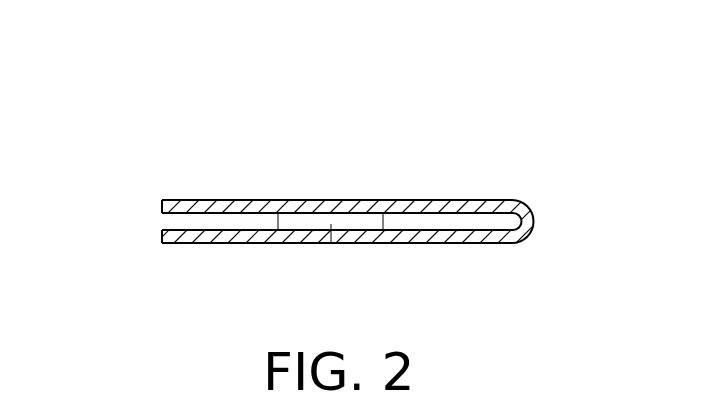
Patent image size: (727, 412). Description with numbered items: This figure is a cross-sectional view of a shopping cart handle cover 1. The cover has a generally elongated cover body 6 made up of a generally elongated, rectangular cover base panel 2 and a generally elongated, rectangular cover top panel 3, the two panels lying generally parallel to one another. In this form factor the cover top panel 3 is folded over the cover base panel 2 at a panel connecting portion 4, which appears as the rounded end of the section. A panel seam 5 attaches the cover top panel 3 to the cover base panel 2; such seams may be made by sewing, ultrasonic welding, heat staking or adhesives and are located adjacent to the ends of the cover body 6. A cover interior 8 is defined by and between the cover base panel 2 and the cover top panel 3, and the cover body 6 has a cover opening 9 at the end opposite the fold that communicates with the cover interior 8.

The shopping cart handle cover 1 is at (279, 118).
The cover base panel 2 is at (420, 243).
The cover top panel 3 is at (428, 200).
The panel connecting portion 4 is at (534, 222).
The panel seam 5 is at (331, 243).
The cover body 6 is at (176, 185).
The cover interior 8 is at (477, 238).
The cover opening 9 is at (141, 230).